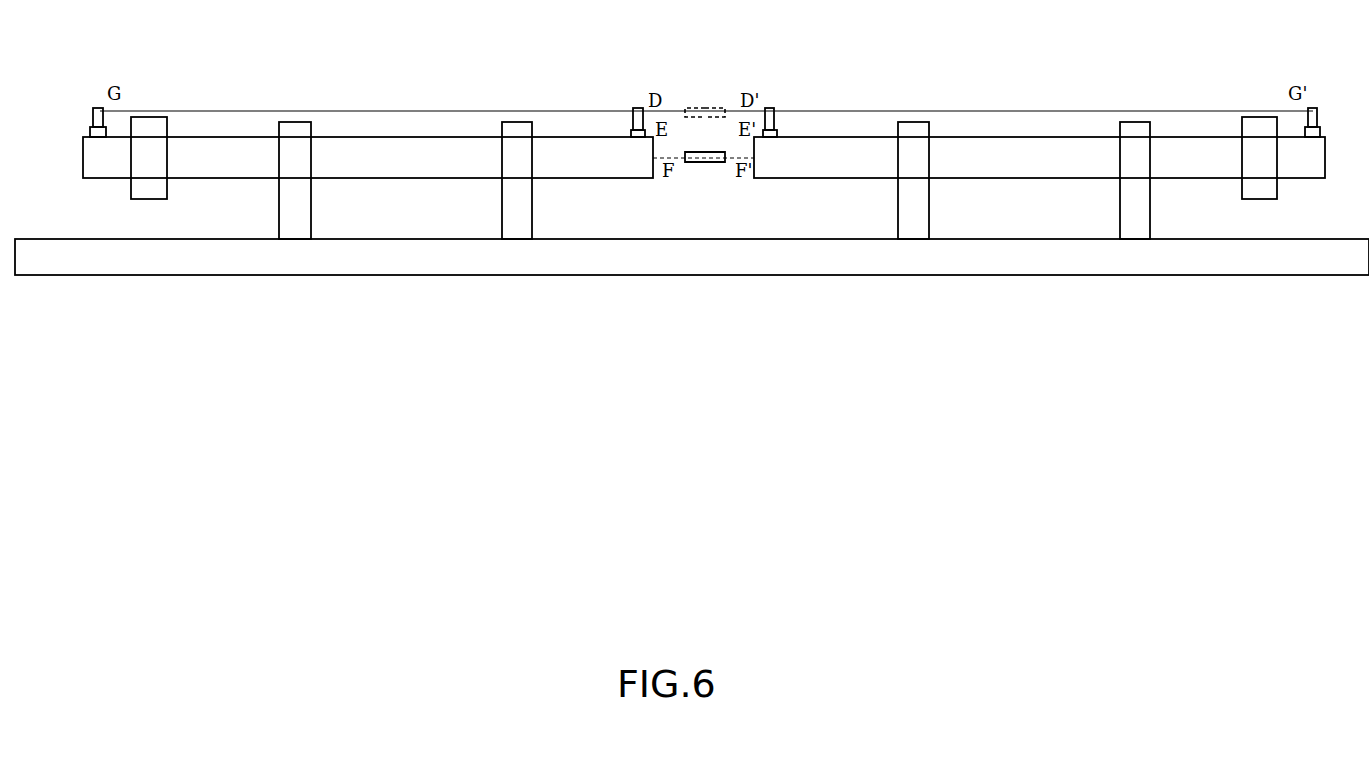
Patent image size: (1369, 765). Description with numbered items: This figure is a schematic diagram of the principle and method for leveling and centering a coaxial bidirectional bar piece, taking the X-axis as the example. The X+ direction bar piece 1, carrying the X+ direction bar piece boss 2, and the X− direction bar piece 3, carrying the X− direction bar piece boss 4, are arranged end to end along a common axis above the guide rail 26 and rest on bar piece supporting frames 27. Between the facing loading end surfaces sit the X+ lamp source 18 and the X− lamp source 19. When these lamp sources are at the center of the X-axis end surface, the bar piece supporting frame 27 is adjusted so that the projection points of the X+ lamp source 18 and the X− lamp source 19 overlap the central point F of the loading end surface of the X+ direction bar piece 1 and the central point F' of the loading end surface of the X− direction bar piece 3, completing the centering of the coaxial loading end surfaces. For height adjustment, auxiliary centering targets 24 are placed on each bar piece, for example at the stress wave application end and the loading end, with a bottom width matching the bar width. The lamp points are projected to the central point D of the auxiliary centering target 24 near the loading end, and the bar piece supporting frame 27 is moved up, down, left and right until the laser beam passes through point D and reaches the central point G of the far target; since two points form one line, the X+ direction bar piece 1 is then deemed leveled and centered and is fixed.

The X+ direction bar piece 1 is at (427, 165).
The X+ direction bar piece boss 2 is at (148, 183).
The X− direction bar piece 3 is at (1009, 165).
The X− direction bar piece boss 4 is at (1258, 183).
The X+ lamp source 18 is at (687, 109).
The X− lamp source 19 is at (723, 109).
The auxiliary centering target 24 is at (100, 105).
The guide rail 26 is at (62, 250).
The bar piece supporting frame 27 is at (293, 208).